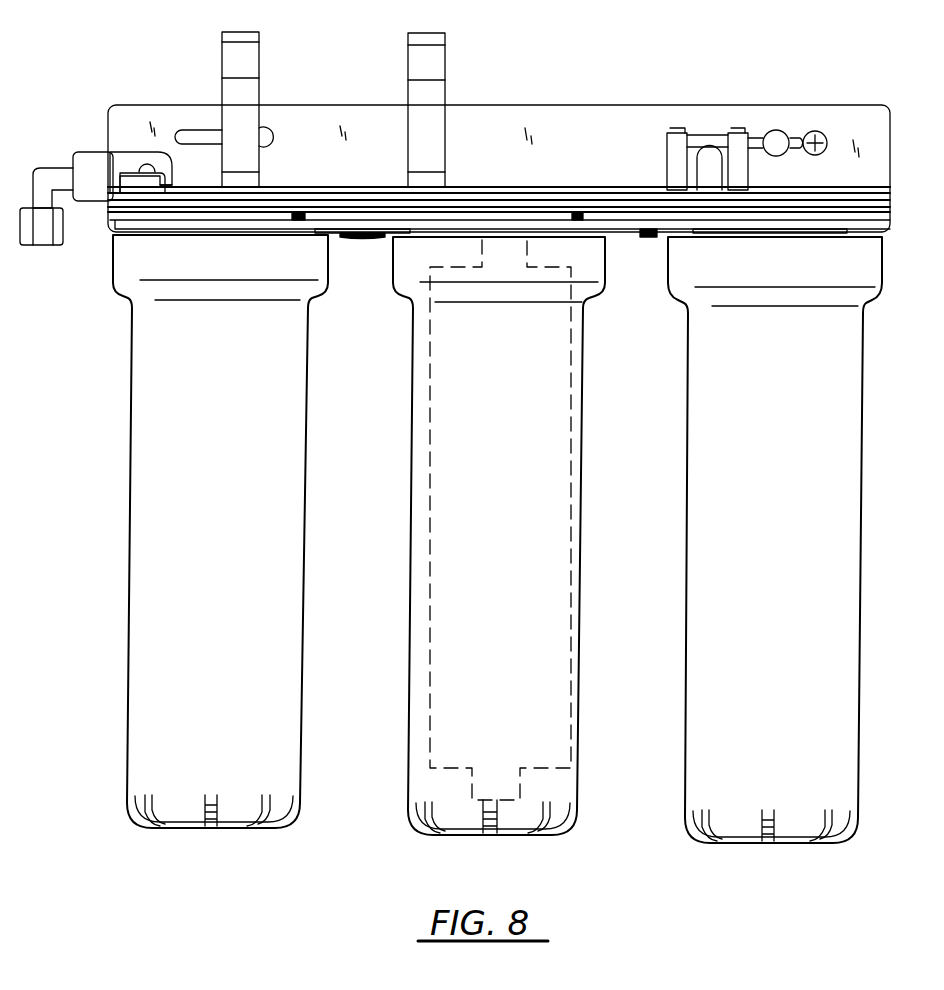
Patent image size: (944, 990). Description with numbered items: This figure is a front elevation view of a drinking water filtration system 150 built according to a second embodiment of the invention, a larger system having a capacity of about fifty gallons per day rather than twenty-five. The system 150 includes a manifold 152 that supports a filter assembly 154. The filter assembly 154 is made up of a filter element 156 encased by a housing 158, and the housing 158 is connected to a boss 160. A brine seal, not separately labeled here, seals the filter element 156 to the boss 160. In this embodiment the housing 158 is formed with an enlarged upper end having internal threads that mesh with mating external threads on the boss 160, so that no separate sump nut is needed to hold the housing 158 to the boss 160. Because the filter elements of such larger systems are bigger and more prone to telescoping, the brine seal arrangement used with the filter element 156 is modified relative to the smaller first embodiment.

The water filtration system 150 is at (712, 48).
The manifold 152 is at (800, 78).
The filter assembly 154 is at (584, 500).
The filter element 156 is at (573, 410).
The housing 158 is at (410, 524).
The boss 160 is at (550, 230).